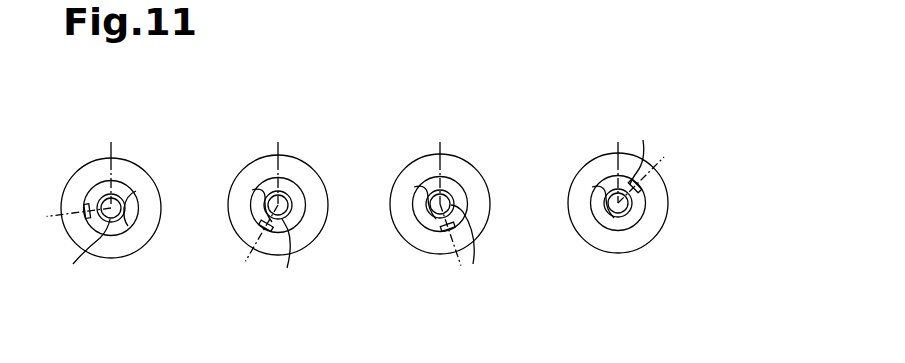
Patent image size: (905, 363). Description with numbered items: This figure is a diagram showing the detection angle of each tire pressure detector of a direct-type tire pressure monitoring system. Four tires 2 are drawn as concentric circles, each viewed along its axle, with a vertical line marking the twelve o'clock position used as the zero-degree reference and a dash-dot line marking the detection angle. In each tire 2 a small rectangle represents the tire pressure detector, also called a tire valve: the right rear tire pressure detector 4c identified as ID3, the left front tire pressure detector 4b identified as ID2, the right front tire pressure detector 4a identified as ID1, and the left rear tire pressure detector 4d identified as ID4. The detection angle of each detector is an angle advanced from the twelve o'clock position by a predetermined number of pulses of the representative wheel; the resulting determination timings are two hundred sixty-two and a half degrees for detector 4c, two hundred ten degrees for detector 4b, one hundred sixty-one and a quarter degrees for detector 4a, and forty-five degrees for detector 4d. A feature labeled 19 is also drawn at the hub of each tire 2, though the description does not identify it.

The tire 2 is at (162, 206).
The hub groove 19 is at (136, 191).
The right front tire pressure detector 4a is at (446, 231).
The left front tire pressure detector 4b is at (260, 240).
The right rear tire pressure detector 4c is at (87, 204).
The left rear tire pressure detector 4d is at (634, 196).